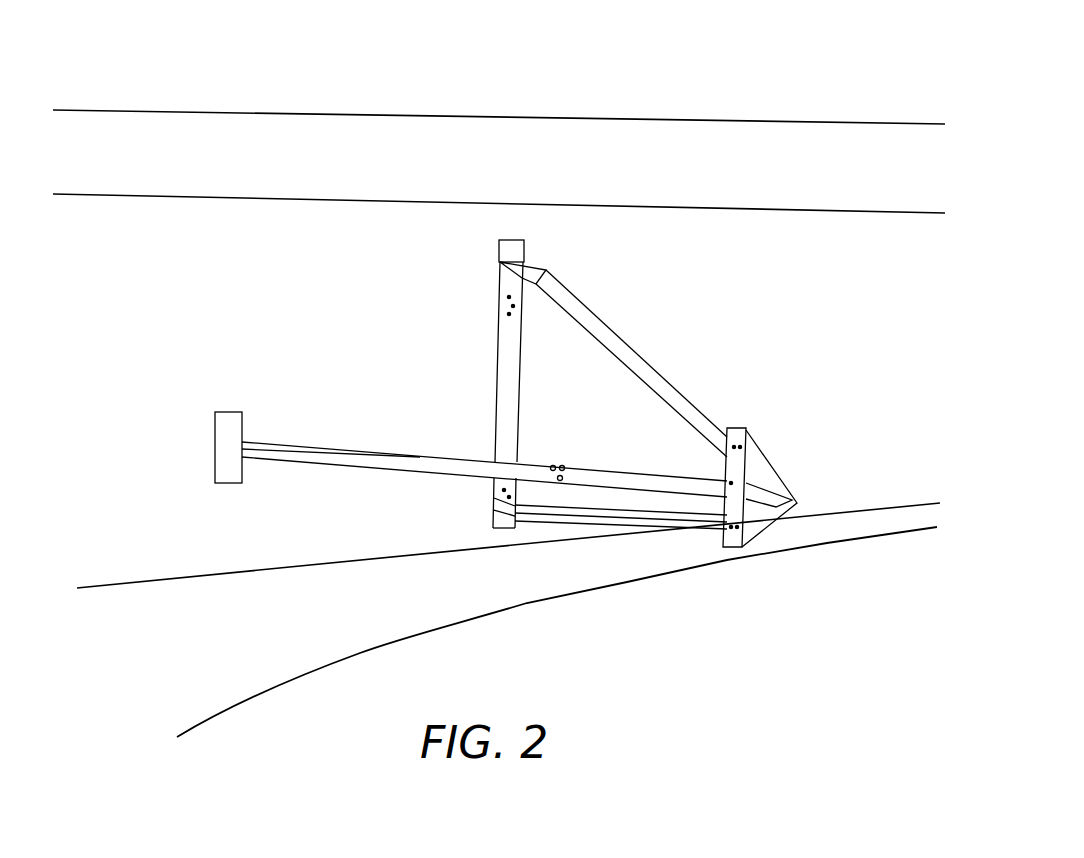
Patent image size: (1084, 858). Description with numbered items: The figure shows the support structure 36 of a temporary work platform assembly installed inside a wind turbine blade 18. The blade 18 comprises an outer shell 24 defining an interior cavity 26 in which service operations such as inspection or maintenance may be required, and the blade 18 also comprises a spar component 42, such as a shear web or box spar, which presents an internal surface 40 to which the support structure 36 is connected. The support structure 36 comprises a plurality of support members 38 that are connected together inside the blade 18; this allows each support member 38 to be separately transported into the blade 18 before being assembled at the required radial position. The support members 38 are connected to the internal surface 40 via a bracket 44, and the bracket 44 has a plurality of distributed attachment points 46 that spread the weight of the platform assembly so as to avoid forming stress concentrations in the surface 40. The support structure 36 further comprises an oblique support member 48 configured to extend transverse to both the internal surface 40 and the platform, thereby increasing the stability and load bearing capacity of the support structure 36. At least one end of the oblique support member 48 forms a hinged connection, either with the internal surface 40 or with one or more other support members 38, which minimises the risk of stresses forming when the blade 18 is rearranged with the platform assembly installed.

The wind turbine blade 18 is at (519, 103).
The spar component 42 is at (446, 220).
The internal surface 40 is at (382, 302).
The support structure 36 is at (526, 410).
The support member 38 is at (660, 376).
The bracket 44 is at (513, 375).
The distributed attachment points 46 is at (502, 307).
The oblique support member 48 is at (377, 462).
The interior cavity 26 is at (273, 631).
The outer shell 24 is at (520, 605).